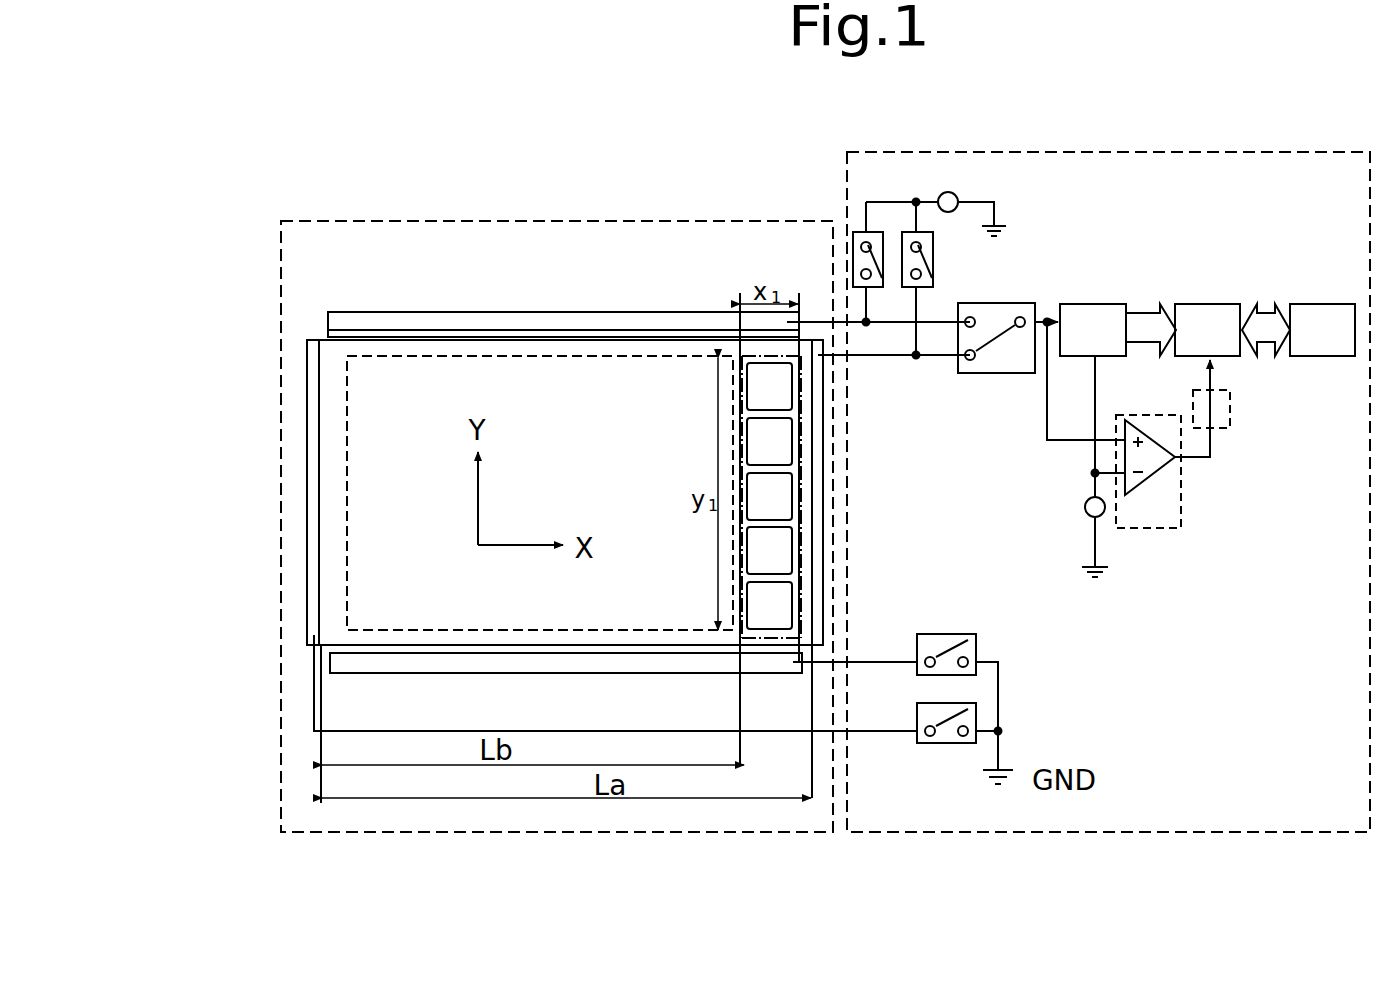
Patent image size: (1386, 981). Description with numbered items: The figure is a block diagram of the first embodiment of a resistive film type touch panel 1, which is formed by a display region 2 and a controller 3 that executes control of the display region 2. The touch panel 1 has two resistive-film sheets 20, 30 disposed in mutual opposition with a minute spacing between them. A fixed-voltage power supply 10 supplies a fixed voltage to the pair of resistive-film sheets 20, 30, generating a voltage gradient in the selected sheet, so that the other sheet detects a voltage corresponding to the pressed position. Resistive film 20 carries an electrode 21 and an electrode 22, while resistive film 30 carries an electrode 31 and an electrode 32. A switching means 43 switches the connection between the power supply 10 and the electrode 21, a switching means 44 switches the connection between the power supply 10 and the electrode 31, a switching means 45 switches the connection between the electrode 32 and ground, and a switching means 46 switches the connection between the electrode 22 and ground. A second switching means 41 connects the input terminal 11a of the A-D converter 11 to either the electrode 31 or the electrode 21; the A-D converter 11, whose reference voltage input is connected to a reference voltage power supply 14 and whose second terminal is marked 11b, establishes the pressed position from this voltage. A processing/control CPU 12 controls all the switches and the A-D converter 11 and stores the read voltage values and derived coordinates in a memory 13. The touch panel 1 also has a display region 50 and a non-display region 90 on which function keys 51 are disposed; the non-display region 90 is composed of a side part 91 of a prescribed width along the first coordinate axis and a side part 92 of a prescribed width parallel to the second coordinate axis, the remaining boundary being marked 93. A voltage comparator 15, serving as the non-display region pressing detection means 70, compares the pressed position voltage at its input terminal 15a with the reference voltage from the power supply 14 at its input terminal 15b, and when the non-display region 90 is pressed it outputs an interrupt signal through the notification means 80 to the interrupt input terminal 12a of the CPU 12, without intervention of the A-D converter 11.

The touch panel 1 is at (725, 106).
The display region 2 is at (566, 219).
The controller 3 is at (846, 186).
The fixed-voltage power supply 10 is at (955, 197).
The A-D converter 11 is at (1088, 304).
The input terminal of the A-D converter 11a is at (1050, 318).
The ADC input line 11b is at (1088, 356).
The CPU 12 is at (1193, 304).
The interrupt input terminal 12a is at (1213, 358).
The memory 13 is at (1303, 304).
The reference voltage power supply 14 is at (1103, 512).
The voltage comparator 15 is at (1148, 478).
The input terminal of the comparator 15a is at (1125, 438).
The input terminal of the comparator 15b is at (1118, 468).
The resistive-film sheet 20 is at (307, 427).
The electrode 21 is at (818, 403).
The electrode 22 is at (312, 372).
The resistive-film sheet 30 is at (400, 312).
The electrode 31 is at (507, 330).
The electrode 32 is at (605, 668).
The second switching means 41 is at (987, 303).
The switching means 43 is at (937, 261).
The switching means 44 is at (877, 232).
The switching means 45 is at (938, 633).
The switching means 46 is at (947, 743).
The display region 50 is at (603, 356).
The function keys 51 is at (793, 400).
The non-display region pressing detection means 70 is at (1109, 463).
The notification means 80 is at (1230, 427).
The non-display region 90 is at (775, 570).
The side part 91 is at (778, 640).
The side part 92 is at (740, 455).
The function key region upper boundary 93 is at (757, 356).